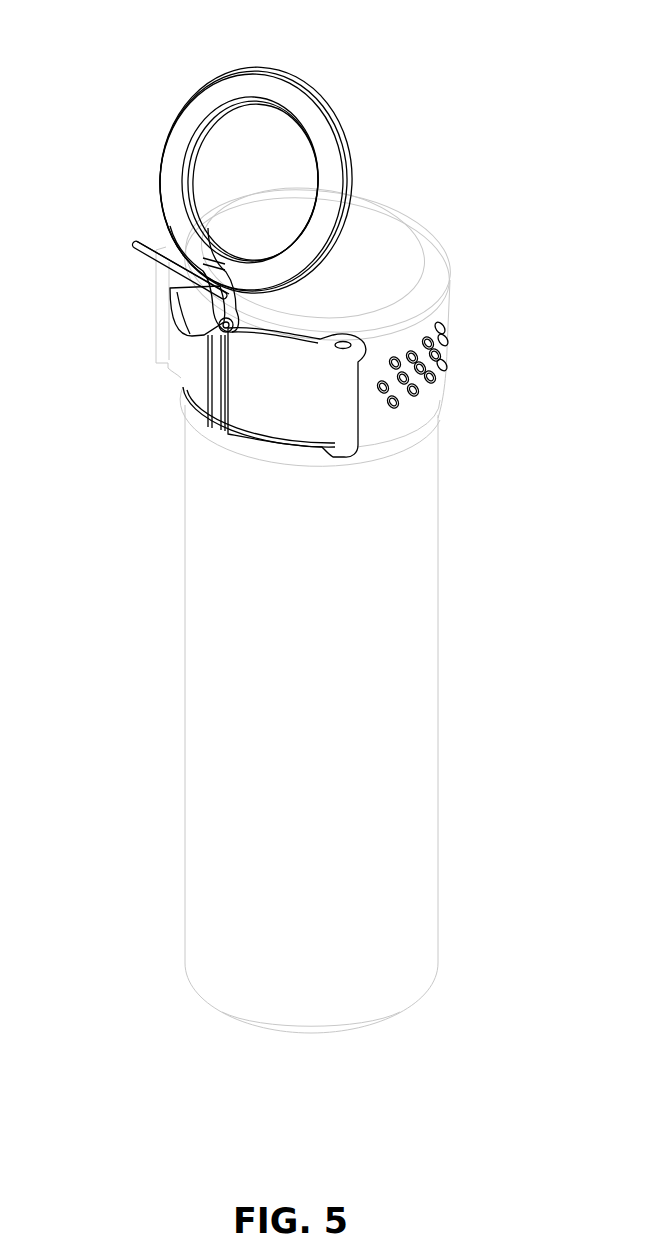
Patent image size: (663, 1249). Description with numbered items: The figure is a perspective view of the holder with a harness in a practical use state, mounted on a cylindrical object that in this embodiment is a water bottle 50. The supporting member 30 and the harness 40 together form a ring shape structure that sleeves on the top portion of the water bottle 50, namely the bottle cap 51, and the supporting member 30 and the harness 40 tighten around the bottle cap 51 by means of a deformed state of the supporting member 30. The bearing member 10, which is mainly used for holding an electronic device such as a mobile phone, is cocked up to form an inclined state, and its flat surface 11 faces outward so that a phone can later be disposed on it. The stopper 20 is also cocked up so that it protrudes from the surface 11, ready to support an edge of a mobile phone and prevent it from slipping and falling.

The bearing member 10 is at (343, 134).
The surface 11 is at (283, 90).
The stopper 20 is at (158, 255).
The supporting member 30 is at (268, 405).
The harness 40 is at (443, 302).
The water bottle 50 is at (355, 582).
The bottle cap 51 is at (363, 250).